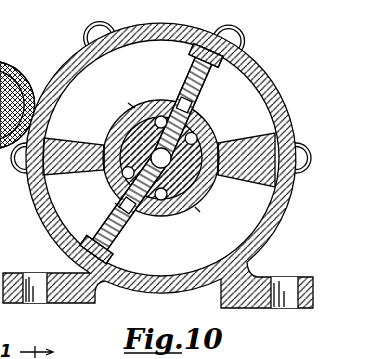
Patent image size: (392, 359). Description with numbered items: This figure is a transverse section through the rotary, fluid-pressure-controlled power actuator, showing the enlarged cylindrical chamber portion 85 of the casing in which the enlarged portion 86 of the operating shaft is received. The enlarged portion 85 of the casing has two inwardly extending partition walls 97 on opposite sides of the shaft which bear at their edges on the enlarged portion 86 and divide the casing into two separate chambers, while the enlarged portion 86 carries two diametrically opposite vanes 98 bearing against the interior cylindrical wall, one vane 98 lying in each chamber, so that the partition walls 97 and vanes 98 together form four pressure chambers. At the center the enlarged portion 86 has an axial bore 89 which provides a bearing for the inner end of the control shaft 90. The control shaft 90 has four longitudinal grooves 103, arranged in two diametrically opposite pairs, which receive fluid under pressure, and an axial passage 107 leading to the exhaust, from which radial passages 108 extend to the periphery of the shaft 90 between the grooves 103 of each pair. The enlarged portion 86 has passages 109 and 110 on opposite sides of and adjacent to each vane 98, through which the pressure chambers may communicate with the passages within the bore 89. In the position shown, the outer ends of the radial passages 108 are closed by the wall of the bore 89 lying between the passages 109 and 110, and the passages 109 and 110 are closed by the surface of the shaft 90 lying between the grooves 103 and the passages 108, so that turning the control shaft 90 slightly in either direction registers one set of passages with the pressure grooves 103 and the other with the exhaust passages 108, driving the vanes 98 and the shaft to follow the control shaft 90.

The enlarged cylindrical chamber portion 85 is at (253, 68).
The enlarged portion of the shaft 86 is at (147, 138).
The axial bore 89 is at (112, 131).
The control shaft 90 is at (110, 117).
The partition walls 97 is at (64, 175).
The vanes 98 is at (204, 85).
The longitudinal grooves 103 is at (128, 103).
The axial passage 107 is at (164, 164).
The radial passages 108 is at (166, 100).
The passages 109 is at (176, 110).
The passages 110 is at (199, 115).